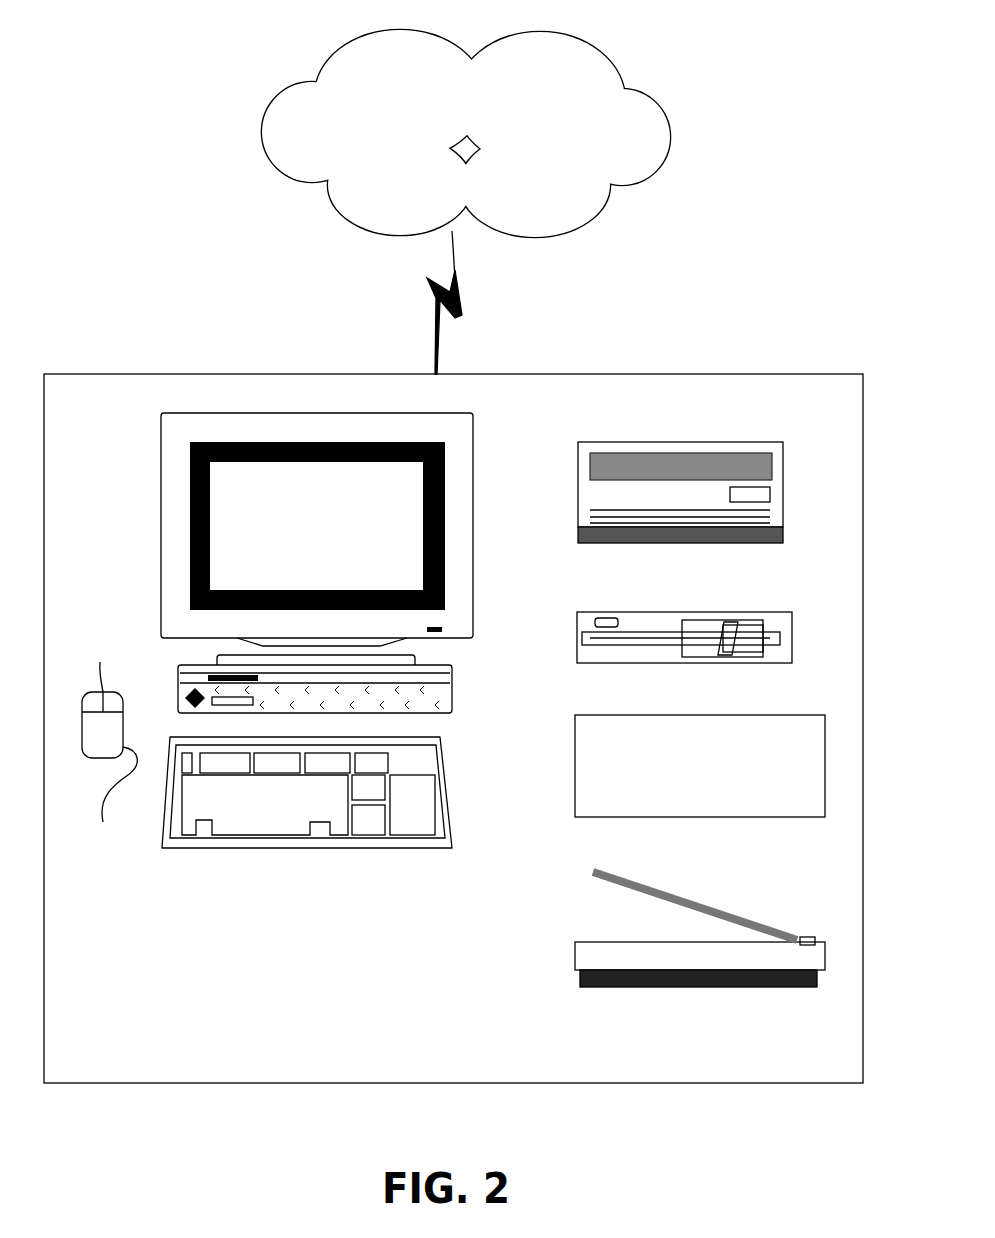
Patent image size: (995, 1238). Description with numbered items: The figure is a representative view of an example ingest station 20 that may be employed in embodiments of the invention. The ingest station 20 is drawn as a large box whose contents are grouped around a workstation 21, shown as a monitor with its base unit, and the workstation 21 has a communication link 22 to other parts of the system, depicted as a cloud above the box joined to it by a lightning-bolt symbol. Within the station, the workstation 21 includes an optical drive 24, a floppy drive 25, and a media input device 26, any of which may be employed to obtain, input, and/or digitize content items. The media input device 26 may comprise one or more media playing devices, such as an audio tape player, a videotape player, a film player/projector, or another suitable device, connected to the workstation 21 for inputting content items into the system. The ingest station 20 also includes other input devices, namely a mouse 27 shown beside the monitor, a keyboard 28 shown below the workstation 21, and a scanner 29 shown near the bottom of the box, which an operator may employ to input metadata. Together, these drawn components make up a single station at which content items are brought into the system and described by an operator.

The ingest station 20 is at (228, 374).
The workstation 21 is at (160, 552).
The communication link 22 is at (597, 200).
The optical drive 24 is at (578, 513).
The floppy drive 25 is at (575, 640).
The media input device 26 is at (575, 778).
The mouse 27 is at (109, 758).
The keyboard 28 is at (260, 852).
The scanner 29 is at (573, 968).